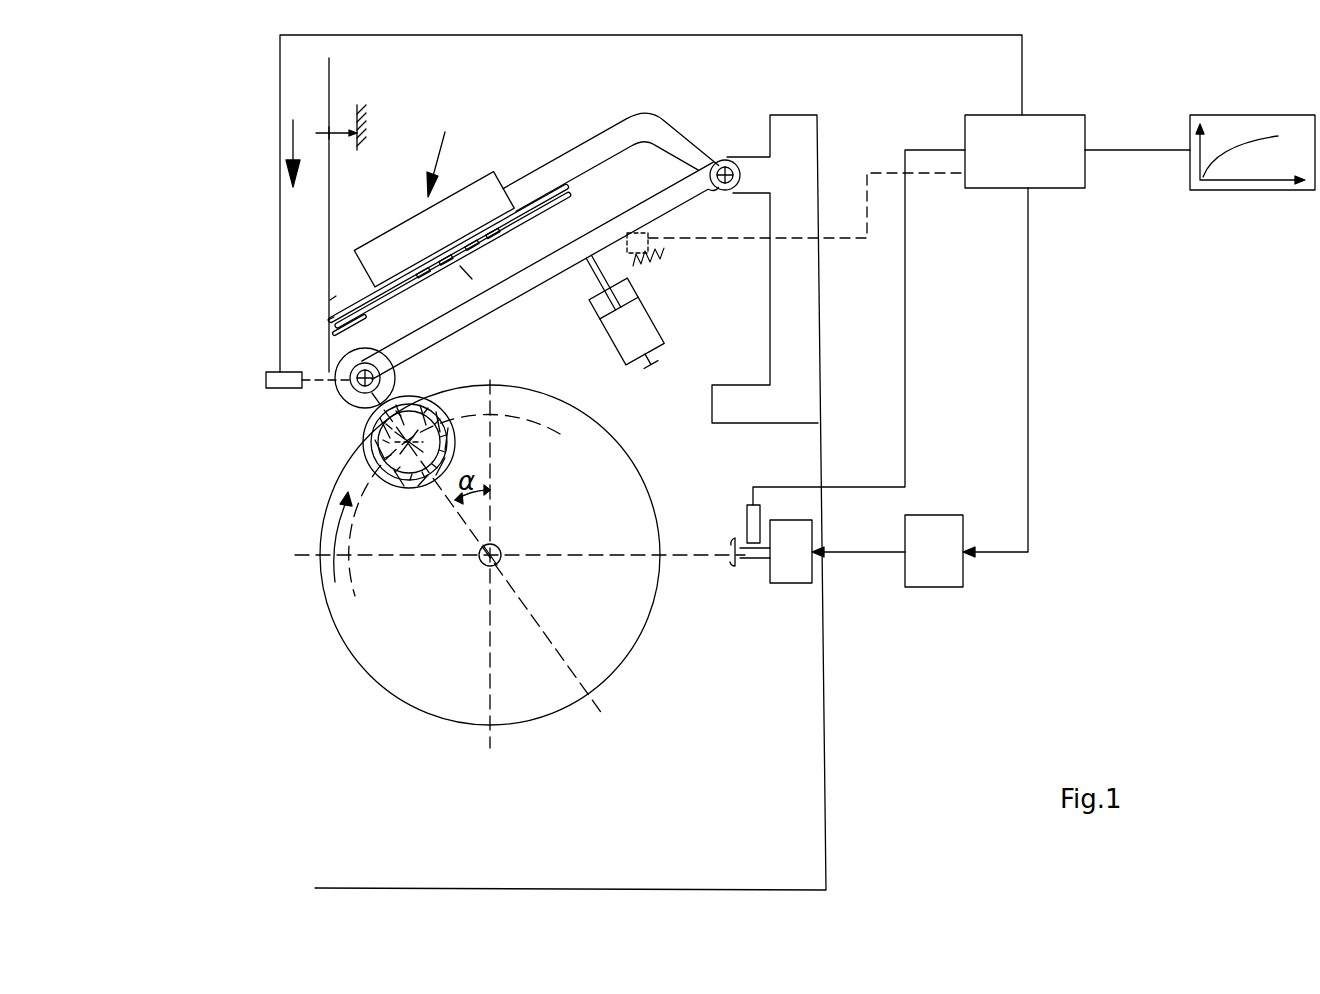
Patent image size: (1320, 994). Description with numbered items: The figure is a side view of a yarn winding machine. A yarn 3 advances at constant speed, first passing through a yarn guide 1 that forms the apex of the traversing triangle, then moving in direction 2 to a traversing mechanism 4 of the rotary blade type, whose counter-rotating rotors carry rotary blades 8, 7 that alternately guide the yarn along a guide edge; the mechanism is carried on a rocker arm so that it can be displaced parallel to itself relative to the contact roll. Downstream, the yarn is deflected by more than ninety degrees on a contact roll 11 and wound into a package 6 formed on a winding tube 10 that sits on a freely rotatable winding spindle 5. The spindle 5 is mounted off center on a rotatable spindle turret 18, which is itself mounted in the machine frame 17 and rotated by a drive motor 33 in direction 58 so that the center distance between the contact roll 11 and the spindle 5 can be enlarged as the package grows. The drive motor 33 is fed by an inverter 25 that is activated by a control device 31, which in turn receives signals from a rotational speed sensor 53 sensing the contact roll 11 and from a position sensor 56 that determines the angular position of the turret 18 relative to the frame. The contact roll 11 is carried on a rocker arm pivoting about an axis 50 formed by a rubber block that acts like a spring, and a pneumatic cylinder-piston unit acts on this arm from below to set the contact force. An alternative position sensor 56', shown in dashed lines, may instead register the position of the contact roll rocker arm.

The yarn guide 1 is at (332, 130).
The direction 2 is at (290, 143).
The yarn 3 is at (329, 78).
The traversing mechanism 4 is at (442, 148).
The winding spindle 5 is at (388, 475).
The package 6 is at (383, 468).
The rotary blade 7 is at (328, 322).
The rotary blade 8 is at (332, 311).
The winding tube 10 is at (294, 510).
The contact roll 11 is at (352, 398).
The frame 17 is at (826, 740).
The spindle turret 18 is at (380, 653).
The inverter 25 is at (940, 565).
The control device 31 is at (1045, 155).
The drive motor 33 is at (788, 567).
The axis 50 is at (728, 166).
The rotational speed sensor 53 is at (268, 381).
The position sensor 56 is at (724, 497).
The position sensor 56' is at (796, 242).
The direction 58 is at (353, 455).